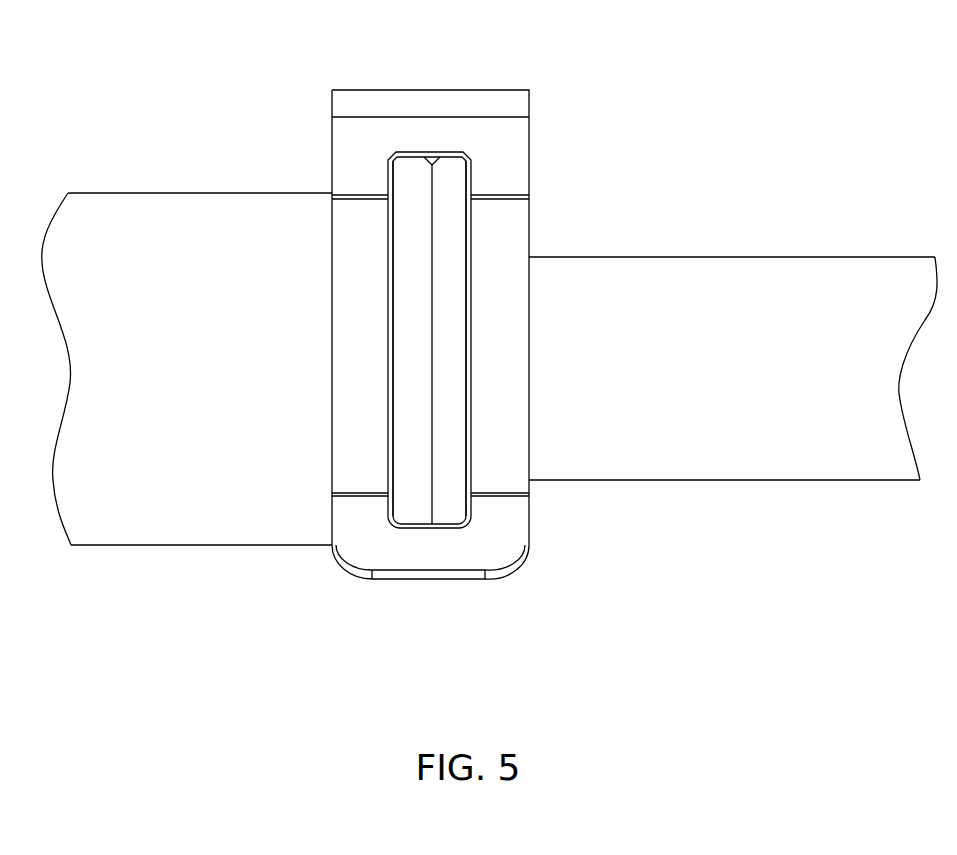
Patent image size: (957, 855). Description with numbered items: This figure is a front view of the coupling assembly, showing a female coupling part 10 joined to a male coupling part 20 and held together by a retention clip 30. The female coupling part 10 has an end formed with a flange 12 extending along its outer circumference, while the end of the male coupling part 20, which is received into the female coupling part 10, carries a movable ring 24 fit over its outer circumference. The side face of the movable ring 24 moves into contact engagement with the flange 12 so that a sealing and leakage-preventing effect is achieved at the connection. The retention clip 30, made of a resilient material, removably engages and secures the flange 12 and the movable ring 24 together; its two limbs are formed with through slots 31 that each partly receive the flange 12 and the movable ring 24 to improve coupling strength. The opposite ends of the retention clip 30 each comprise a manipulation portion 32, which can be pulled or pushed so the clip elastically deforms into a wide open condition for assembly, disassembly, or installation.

The female coupling part 10 is at (152, 207).
The flange 12 is at (415, 177).
The male coupling part 20 is at (773, 262).
The movable ring 24 is at (453, 177).
The retention clip 30 is at (452, 102).
The through slots 31 is at (432, 157).
The manipulation portion 32 is at (520, 519).